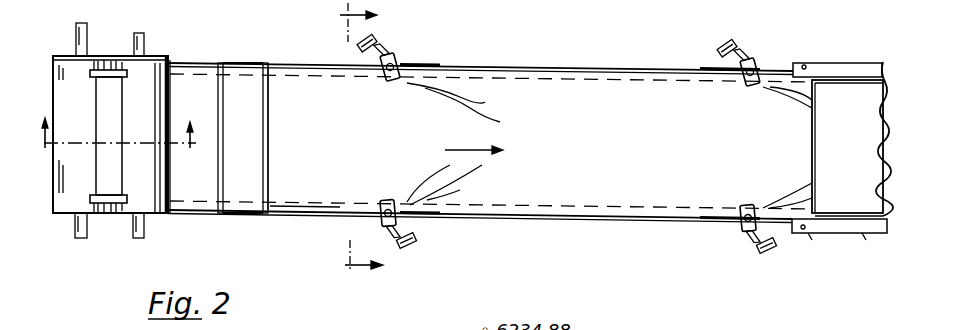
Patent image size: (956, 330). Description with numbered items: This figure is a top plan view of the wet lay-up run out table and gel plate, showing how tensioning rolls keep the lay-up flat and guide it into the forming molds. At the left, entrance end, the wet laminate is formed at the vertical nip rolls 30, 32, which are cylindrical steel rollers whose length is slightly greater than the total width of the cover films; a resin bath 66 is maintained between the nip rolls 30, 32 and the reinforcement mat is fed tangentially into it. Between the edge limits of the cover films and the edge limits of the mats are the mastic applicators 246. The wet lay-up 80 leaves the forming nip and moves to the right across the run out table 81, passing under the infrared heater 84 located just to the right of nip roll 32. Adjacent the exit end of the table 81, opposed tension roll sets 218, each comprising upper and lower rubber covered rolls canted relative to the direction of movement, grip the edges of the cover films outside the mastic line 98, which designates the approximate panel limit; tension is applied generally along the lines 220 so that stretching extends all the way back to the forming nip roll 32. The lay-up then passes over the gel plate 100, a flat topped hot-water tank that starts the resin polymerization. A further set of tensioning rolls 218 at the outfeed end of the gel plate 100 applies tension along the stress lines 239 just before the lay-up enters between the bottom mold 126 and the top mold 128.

The nip roll 30 is at (58, 216).
The nip roll 32 is at (160, 216).
The mastic applicator 246 is at (100, 70).
The resin bath 66 is at (112, 88).
The infrared heater 84 is at (253, 143).
The table 81 is at (262, 220).
The wet lay-up 80 is at (282, 190).
The mastic line 98 is at (537, 80).
The gel plate 100 is at (492, 60).
The tension roll set 218 is at (403, 46).
The tension lines 220 is at (447, 100).
The stress lines 239 is at (790, 110).
The bottom mold 126 is at (812, 233).
The top mold 128 is at (866, 232).